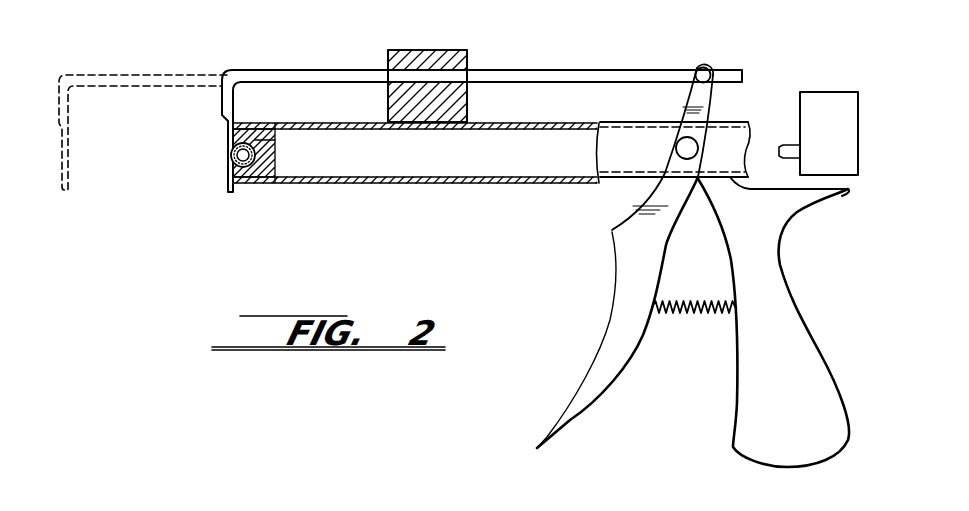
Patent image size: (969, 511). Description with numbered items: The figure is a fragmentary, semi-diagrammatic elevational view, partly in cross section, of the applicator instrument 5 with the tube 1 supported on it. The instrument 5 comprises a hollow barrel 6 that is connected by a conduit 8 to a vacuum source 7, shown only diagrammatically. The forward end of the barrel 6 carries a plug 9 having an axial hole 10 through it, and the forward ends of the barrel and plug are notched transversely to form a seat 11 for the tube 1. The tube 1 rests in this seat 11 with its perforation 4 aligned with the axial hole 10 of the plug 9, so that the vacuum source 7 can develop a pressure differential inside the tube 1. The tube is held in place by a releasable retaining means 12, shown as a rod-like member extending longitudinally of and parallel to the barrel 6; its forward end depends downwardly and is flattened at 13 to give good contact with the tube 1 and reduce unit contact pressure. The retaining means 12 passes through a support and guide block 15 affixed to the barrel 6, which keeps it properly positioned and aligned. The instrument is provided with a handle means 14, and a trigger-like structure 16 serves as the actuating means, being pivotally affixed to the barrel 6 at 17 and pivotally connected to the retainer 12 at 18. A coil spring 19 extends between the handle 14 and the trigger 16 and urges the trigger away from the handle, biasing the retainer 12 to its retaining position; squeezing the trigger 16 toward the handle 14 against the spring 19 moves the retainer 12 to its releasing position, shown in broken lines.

The tube 1 is at (231, 155).
The perforation 4 is at (258, 148).
The applicator instrument 5 is at (596, 184).
The hollow barrel 6 is at (392, 181).
The vacuum source 7 is at (817, 92).
The conduit 8 is at (784, 145).
The plug 9 is at (267, 170).
The axial hole 10 is at (273, 152).
The seat 11 is at (253, 130).
The retaining means 12 is at (113, 74).
The flattened forward end 13 is at (70, 157).
The handle means 14 is at (768, 278).
The support and guide block 15 is at (445, 52).
The trigger-like structure 16 is at (620, 265).
The pivot on barrel 17 is at (690, 145).
The pivotal connection to retainer 18 is at (708, 70).
The coil spring 19 is at (692, 318).